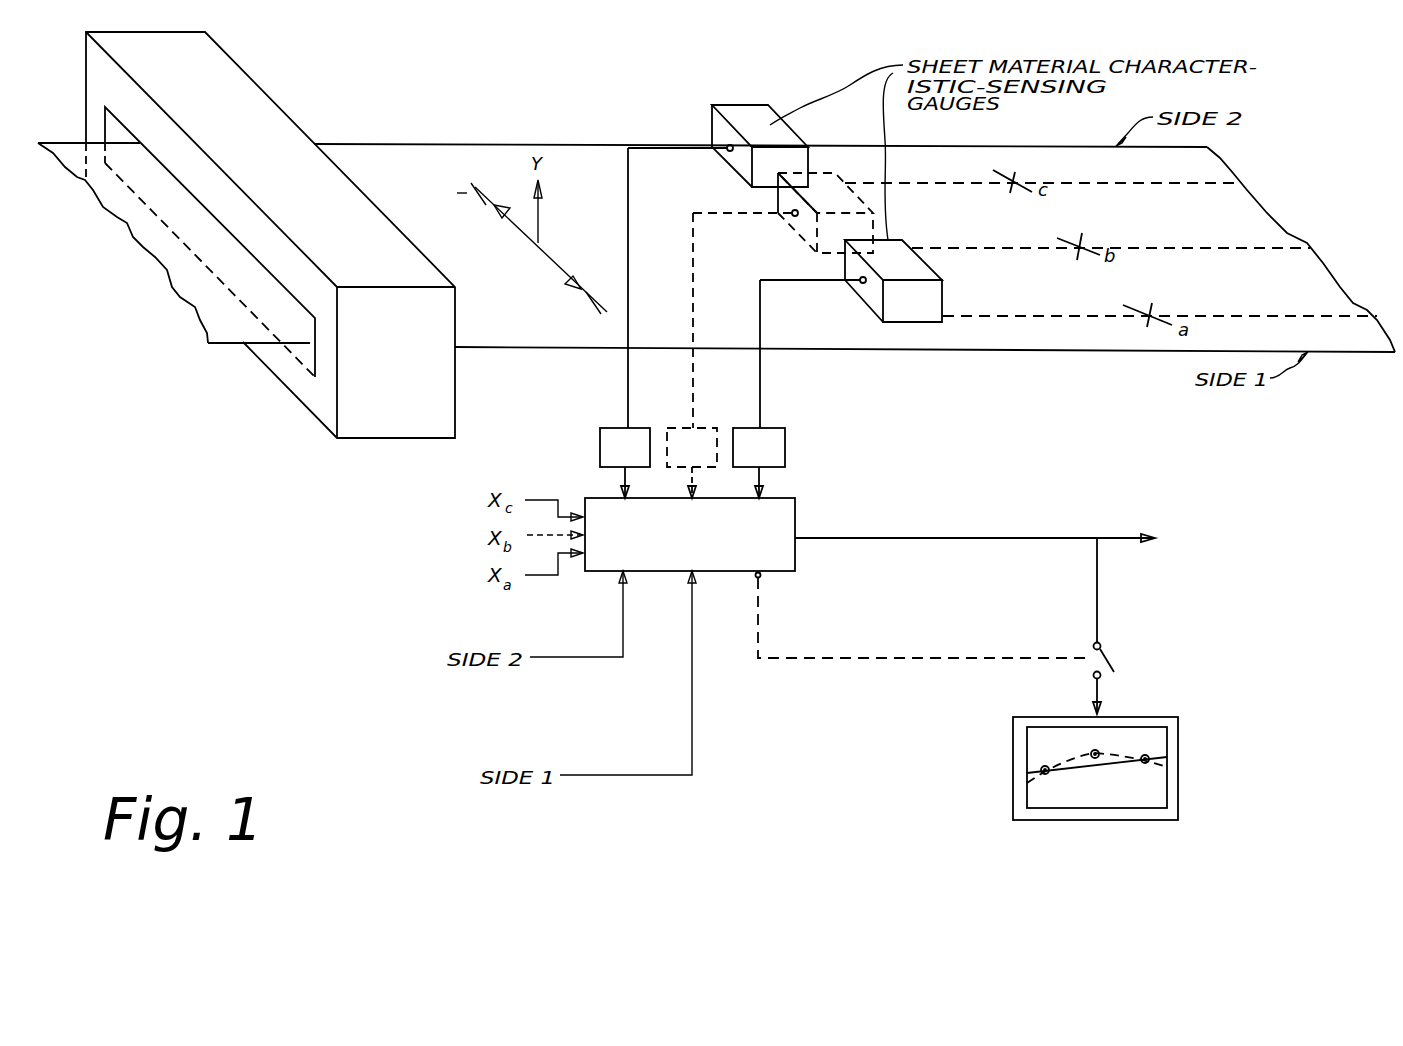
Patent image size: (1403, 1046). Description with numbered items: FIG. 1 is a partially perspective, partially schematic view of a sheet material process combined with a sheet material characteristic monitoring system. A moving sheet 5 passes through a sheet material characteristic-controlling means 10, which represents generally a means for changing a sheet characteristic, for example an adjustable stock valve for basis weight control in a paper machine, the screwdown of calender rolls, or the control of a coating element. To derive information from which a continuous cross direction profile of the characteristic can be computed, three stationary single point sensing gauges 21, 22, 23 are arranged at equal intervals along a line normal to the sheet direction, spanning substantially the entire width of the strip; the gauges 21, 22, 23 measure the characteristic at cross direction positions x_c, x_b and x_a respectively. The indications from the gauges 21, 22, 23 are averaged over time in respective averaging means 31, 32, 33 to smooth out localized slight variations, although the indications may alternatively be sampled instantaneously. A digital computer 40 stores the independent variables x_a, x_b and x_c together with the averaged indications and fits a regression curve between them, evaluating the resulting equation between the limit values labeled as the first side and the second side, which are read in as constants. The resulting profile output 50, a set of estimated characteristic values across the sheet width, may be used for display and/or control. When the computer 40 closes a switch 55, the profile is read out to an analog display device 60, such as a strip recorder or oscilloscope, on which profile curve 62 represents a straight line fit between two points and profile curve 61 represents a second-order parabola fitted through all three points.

The sheet material 5 is at (450, 148).
The sheet material characteristic-controlling means 10 is at (260, 106).
The stationary characteristic-sensing gauge 21 is at (727, 165).
The stationary characteristic-sensing gauge 22 is at (795, 232).
The stationary characteristic-sensing gauge 23 is at (862, 297).
The averaging means 31 is at (608, 427).
The averaging means 32 is at (677, 427).
The averaging means 33 is at (743, 427).
The digital computer 40 is at (797, 507).
The profile output 50 is at (1096, 588).
The switch 55 is at (1119, 679).
The analog display device 60 is at (1118, 784).
The profile curve 61 is at (1067, 758).
The profile curve 62 is at (1090, 767).